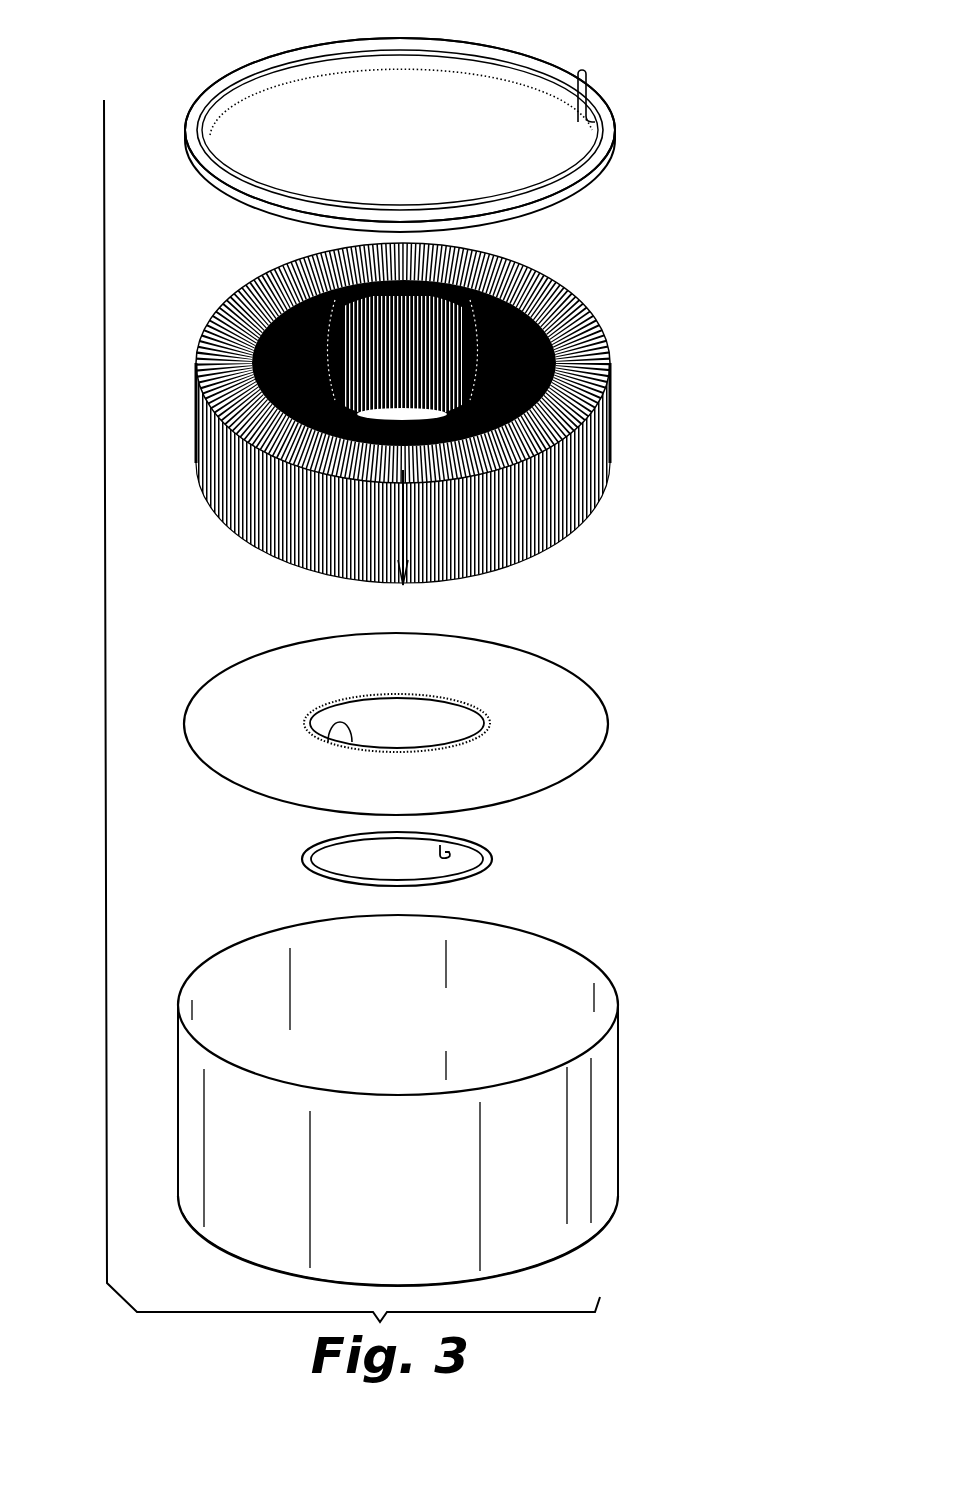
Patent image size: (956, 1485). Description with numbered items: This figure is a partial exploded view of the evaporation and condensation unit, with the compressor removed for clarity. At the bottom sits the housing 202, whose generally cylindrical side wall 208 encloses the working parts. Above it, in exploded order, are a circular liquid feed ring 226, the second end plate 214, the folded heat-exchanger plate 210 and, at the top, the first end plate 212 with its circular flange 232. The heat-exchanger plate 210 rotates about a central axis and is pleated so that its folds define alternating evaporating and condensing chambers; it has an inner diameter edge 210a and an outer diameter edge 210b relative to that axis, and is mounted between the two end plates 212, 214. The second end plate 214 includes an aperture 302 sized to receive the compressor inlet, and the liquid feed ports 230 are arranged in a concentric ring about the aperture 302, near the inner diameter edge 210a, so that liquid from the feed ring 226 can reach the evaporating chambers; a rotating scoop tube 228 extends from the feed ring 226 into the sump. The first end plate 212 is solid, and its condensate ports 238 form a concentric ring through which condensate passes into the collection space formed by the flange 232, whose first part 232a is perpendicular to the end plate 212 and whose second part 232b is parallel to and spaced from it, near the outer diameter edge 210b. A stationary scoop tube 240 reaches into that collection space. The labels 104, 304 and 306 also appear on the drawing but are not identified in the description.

The filter assembly cover ring 104 is at (590, 51).
The housing 202 is at (408, 1100).
The side wall 208 is at (174, 1095).
The heat-exchanger plate 210 is at (425, 454).
The inner diameter edge 210a is at (520, 255).
The outer diameter edge 210b is at (257, 553).
The first end plate 212 is at (242, 110).
The second end plate 214 is at (438, 720).
The liquid feed ring 226 is at (439, 862).
The rotating scoop tube 228 is at (437, 850).
The liquid feed ports 230 is at (486, 710).
The circular flange 232 is at (592, 182).
The first part 232a is at (238, 198).
The second part 232b is at (190, 133).
The condensate ports 238 is at (409, 70).
The stationary scoop tube 240 is at (590, 84).
The aperture 302 is at (333, 722).
The pleat seam 304 is at (405, 585).
The pleat tip 306 is at (400, 582).